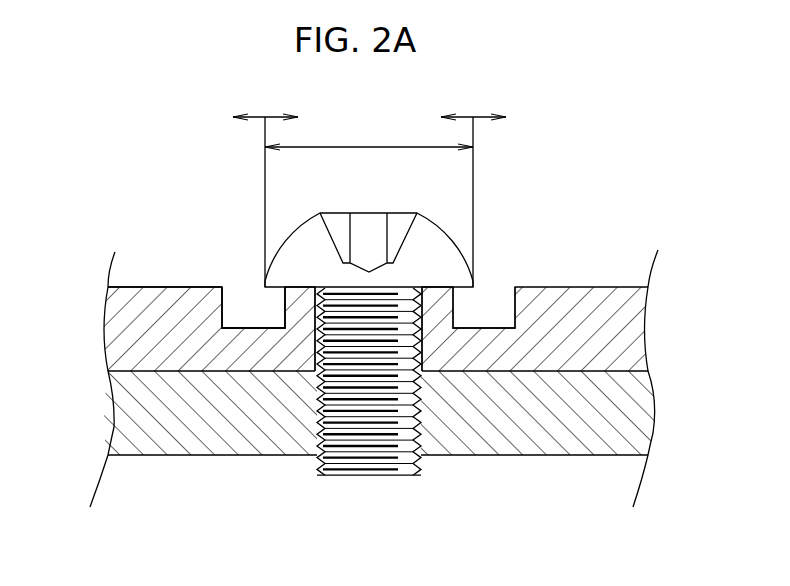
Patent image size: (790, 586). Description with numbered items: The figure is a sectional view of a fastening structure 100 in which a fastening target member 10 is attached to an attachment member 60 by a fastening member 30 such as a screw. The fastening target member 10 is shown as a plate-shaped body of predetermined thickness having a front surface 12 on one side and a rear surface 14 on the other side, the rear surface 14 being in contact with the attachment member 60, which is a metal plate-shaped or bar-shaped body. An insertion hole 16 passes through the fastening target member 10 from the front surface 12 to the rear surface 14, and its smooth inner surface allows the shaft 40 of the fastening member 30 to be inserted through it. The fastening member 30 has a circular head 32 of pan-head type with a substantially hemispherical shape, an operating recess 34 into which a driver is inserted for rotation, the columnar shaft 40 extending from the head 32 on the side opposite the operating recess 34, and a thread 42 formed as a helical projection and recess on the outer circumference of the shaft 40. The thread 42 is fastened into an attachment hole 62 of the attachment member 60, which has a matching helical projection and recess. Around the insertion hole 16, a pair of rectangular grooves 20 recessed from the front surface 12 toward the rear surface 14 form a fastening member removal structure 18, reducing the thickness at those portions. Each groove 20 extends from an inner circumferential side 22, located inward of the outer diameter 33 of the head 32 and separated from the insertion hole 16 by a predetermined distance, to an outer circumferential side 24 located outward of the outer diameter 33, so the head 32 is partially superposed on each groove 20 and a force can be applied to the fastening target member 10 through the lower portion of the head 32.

The fastening structure 100 is at (76, 94).
The fastening target member 10 is at (595, 287).
The front surface 12 is at (145, 287).
The rear surface 14 is at (130, 372).
The insertion hole 16 is at (421, 288).
The fastening member removal structure 18 is at (245, 277).
The grooves 20 is at (238, 303).
The inner circumferential side 22 is at (369, 186).
The outer circumferential side 24 is at (371, 101).
The fastening member 30 is at (394, 428).
The head 32 is at (427, 229).
The outer diameter 33 is at (369, 132).
The operating recess 34 is at (338, 223).
The shaft 40 is at (350, 477).
The thread 42 is at (318, 468).
The attachment member 60 is at (215, 455).
The attachment hole 62 is at (418, 373).